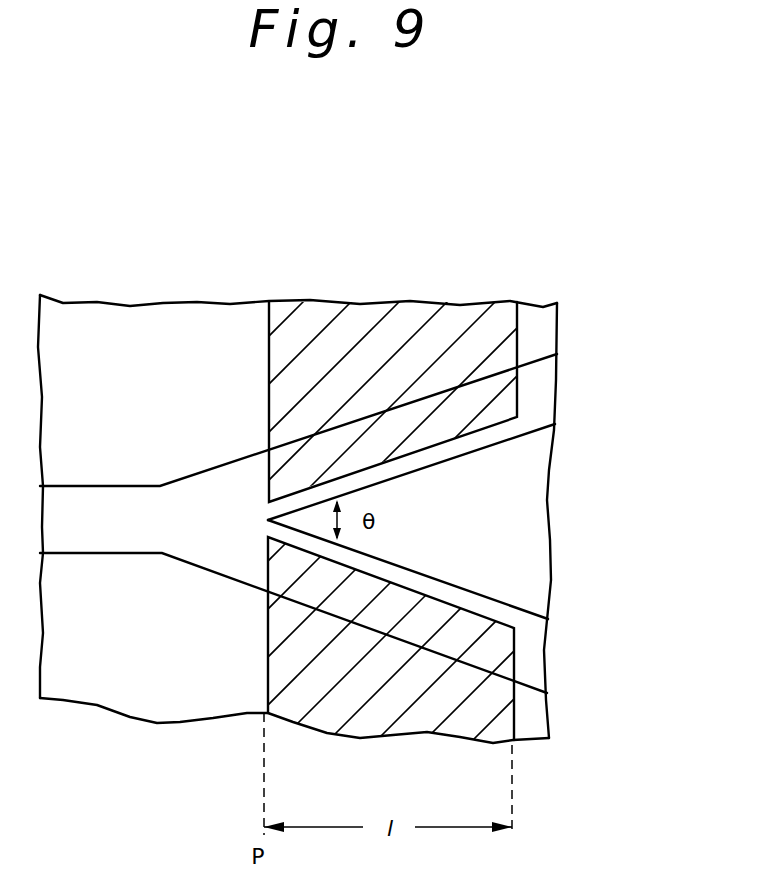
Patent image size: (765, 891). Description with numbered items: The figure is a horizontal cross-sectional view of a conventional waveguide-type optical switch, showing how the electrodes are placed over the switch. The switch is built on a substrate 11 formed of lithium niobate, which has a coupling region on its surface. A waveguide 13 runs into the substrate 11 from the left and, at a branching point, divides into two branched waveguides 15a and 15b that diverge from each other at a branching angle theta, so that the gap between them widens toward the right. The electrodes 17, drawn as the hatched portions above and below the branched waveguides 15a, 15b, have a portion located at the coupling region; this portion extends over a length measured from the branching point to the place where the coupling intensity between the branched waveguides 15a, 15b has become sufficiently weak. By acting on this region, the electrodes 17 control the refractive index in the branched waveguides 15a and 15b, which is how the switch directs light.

The substrate 11 is at (203, 290).
The waveguide 13 is at (103, 538).
The branched waveguide 15a is at (540, 380).
The branched waveguide 15b is at (530, 650).
The electrodes 17 is at (405, 320).